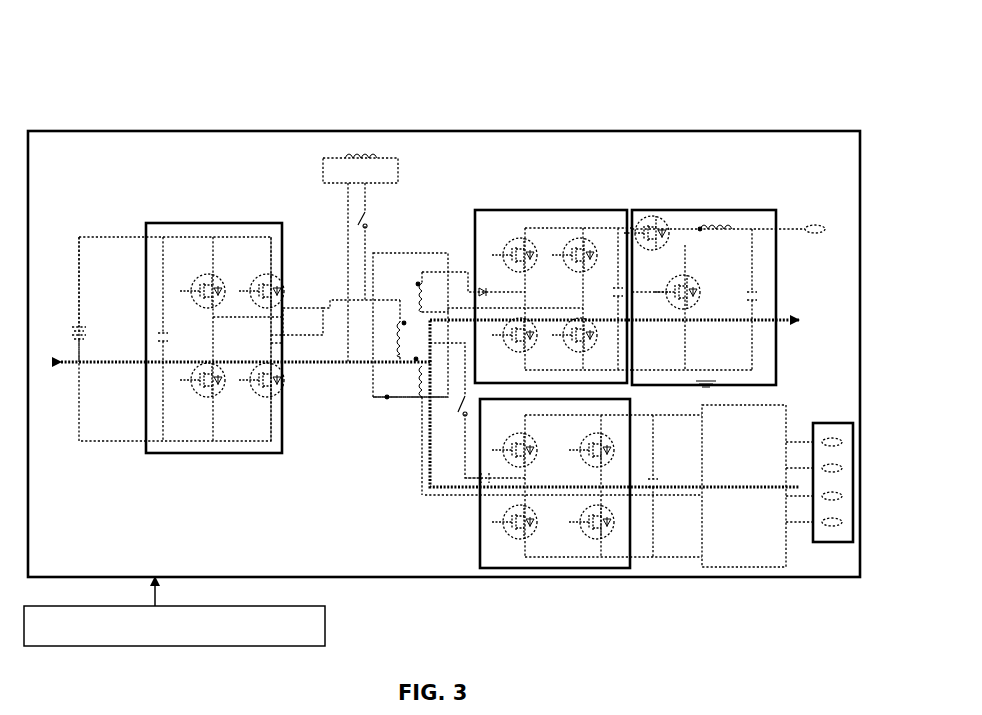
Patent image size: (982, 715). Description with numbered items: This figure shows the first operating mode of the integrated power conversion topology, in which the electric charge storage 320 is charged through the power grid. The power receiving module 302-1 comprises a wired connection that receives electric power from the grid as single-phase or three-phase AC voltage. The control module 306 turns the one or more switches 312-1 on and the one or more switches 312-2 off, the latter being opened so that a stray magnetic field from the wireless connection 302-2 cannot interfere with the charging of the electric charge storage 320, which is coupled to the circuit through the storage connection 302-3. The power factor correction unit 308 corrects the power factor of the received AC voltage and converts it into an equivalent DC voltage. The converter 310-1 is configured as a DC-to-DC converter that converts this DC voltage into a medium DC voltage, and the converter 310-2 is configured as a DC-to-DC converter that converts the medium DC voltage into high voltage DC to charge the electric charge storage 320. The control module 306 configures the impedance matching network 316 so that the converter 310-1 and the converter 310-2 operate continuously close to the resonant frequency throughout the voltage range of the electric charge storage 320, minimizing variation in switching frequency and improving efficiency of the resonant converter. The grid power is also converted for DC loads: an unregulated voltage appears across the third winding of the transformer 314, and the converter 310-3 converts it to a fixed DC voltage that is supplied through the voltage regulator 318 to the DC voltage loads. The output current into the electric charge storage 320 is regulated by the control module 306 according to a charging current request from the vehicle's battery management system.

The power receiving module 302-1 is at (832, 544).
The wireless connection 302-2 is at (360, 149).
The storage connection 302-3 is at (98, 236).
The control module 306 is at (174, 611).
The power factor correction unit 308 is at (730, 559).
The converter 310-1 is at (550, 570).
The converter 310-2 is at (212, 221).
The converter 310-3 is at (554, 209).
The switches 312-1 is at (465, 417).
The switches 312-2 is at (364, 222).
The transformer 314 is at (387, 397).
The impedance matching network 316 is at (303, 306).
The voltage regulator 318 is at (698, 208).
The electric charge storage 320 is at (78, 324).